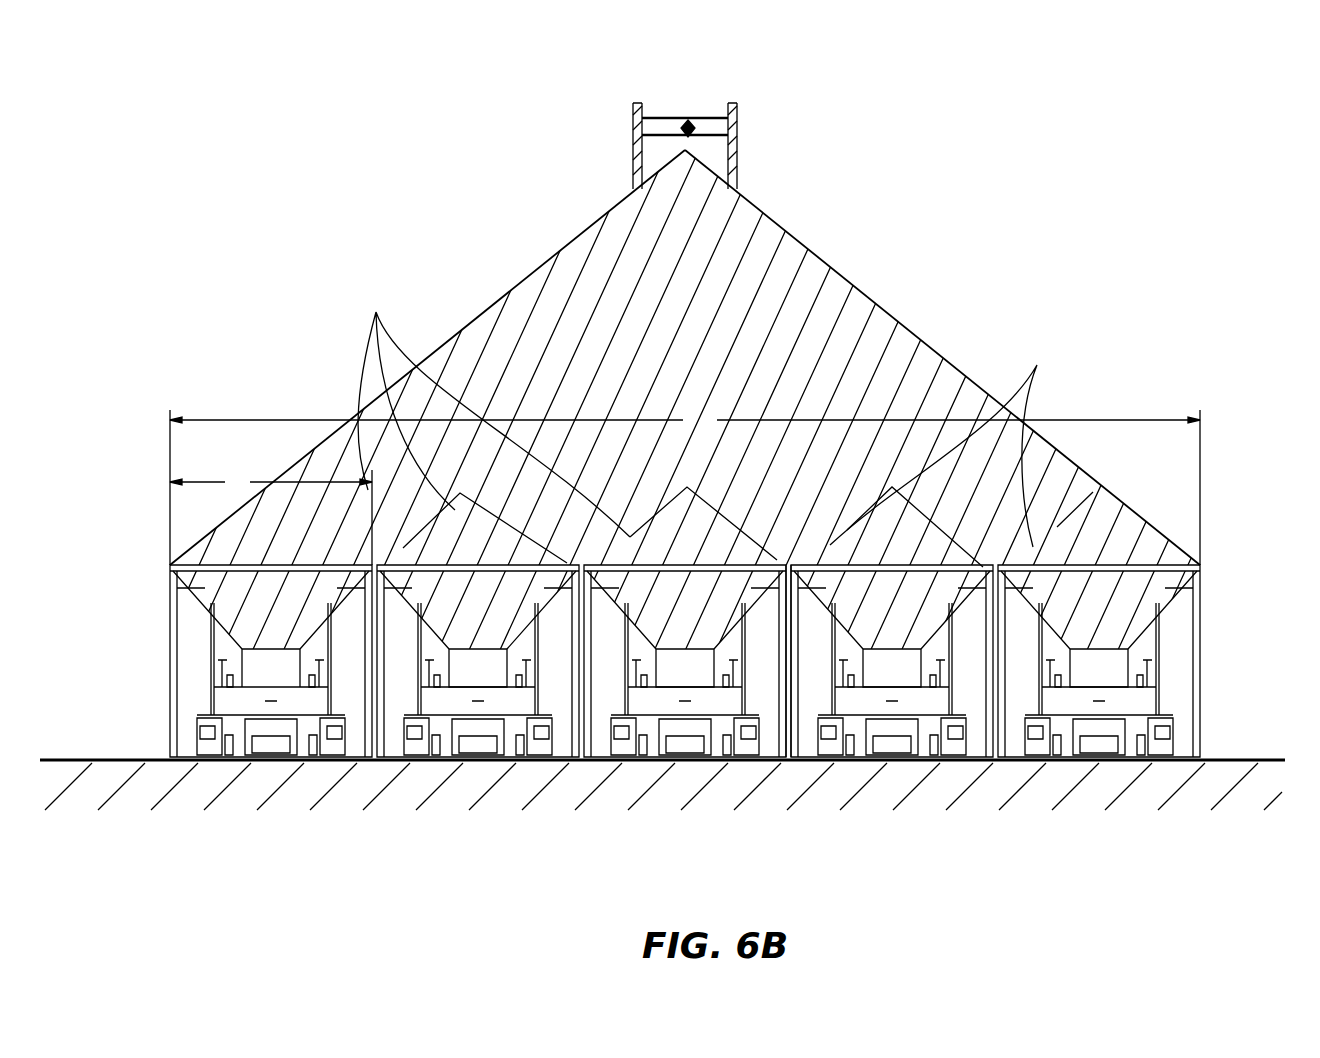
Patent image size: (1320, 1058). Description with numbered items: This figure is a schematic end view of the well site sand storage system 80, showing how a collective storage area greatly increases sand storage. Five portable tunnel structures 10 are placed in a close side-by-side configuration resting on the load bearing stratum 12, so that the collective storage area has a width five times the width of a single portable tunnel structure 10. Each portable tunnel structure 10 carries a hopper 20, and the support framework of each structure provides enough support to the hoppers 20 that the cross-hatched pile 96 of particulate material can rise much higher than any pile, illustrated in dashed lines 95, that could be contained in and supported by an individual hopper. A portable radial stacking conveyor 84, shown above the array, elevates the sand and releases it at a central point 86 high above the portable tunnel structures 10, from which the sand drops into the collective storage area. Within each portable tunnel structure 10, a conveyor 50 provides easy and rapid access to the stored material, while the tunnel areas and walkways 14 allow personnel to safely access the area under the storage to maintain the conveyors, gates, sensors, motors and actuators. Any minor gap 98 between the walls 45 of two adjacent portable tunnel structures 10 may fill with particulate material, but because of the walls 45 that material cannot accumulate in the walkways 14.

The portable tunnel structure 10 is at (680, 639).
The load bearing stratum 12 is at (737, 803).
The walkway 14 is at (203, 683).
The hopper 20 is at (178, 613).
The wall 45 is at (795, 705).
The conveyor 50 is at (250, 698).
The well site sand storage system 80 is at (131, 433).
The portable radial stacking conveyor 84 is at (663, 110).
The central point 86 is at (688, 118).
The dashed lines 95 is at (725, 427).
The pile 96 is at (673, 323).
The gap 98 is at (776, 545).